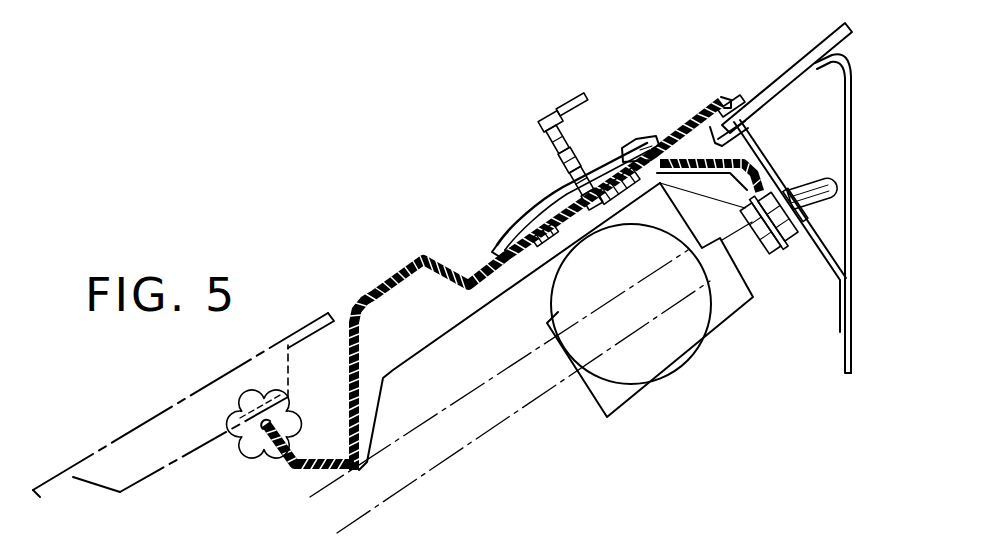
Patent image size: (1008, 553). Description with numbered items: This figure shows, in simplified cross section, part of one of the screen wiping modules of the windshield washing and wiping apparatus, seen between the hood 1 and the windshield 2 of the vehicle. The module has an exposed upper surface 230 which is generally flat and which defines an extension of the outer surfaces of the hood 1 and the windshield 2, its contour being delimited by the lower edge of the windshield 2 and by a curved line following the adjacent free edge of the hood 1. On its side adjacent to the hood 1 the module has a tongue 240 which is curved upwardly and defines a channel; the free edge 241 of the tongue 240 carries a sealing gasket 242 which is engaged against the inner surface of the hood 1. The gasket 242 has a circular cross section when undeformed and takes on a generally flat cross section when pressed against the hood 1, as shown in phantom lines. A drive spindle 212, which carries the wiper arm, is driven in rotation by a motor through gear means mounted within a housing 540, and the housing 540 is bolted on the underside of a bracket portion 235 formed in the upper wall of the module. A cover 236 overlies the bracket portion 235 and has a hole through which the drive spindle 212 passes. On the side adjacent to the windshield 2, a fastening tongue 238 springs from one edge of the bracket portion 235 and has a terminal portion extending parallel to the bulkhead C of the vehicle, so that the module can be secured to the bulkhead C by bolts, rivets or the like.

The hood 1 is at (170, 443).
The windshield 2 is at (803, 56).
The drive spindle 212 is at (562, 167).
The upper surface 230 is at (383, 284).
The bracket portion 235 is at (524, 230).
The cover 236 is at (623, 141).
The fastening tongue 238 is at (767, 161).
The tongue 240 is at (343, 466).
The free edge 241 is at (264, 440).
The sealing gasket 242 is at (286, 400).
The housing 540 is at (723, 303).
The bulkhead C is at (851, 230).